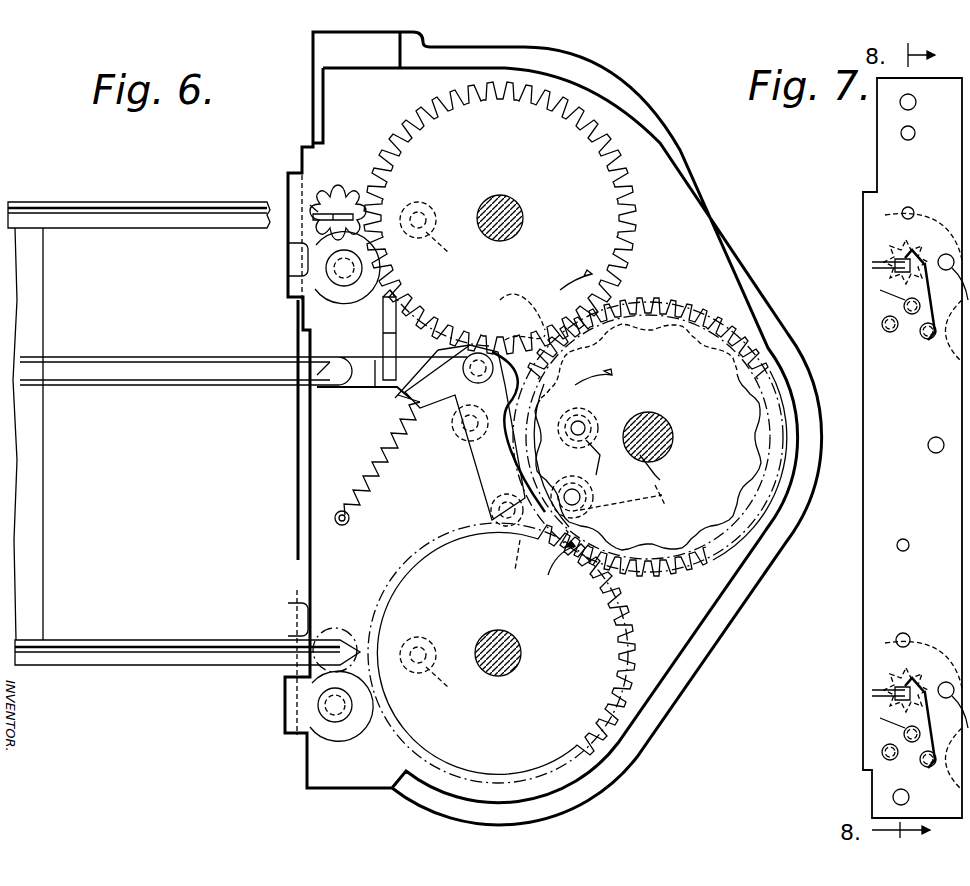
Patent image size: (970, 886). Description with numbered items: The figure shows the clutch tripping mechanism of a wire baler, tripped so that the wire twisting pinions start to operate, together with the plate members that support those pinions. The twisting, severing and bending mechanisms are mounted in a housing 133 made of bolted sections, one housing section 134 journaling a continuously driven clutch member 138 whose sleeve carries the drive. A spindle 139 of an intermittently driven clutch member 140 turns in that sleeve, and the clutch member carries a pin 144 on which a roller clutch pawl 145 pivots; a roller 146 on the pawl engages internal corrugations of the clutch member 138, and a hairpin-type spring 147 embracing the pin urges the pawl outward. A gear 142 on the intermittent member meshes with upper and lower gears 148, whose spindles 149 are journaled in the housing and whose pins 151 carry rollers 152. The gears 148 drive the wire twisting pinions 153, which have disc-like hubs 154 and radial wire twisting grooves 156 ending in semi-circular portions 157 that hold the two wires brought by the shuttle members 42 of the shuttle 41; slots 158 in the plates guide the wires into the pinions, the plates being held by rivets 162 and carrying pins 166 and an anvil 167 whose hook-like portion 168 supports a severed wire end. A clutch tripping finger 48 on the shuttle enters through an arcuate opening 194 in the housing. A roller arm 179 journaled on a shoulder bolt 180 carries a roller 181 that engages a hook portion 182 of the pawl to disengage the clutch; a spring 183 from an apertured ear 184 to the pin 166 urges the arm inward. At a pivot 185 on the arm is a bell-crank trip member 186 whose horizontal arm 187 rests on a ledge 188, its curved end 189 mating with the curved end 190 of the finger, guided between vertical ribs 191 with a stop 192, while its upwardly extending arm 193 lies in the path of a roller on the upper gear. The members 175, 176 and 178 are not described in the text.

In FIG. 6, the shuttle 41 is at (86, 202).
In FIG. 6, the shuttle members 42 is at (156, 202).
In FIG. 6, the clutch tripping finger 48 is at (136, 357).
In FIG. 6, the housing 133 is at (748, 598).
In FIG. 6, the housing section 134 is at (655, 680).
In FIG. 6, the continuously driven clutch member 138 is at (760, 368).
In FIG. 6, the spindle 139 is at (652, 406).
In FIG. 6, the intermittently driven clutch member 140 is at (678, 462).
In FIG. 6, the gear 142 is at (660, 310).
In FIG. 6, the pin 144 is at (580, 420).
In FIG. 6, the roller clutch pawl 145 is at (540, 430).
In FIG. 6, the roller 146 is at (552, 565).
In FIG. 6, the hairpin-type spring 147 is at (618, 497).
In FIG. 6, the upper and lower gears 148 is at (410, 122).
In FIG. 6, the spindles 149 is at (523, 222).
In FIG. 6, the pins 151 is at (449, 463).
In FIG. 6, the rollers 152 is at (424, 204).
In FIG. 6, the wire twisting pinions 153 is at (340, 188).
In FIG. 7, the wire twisting pinions 153 is at (878, 230).
In FIG. 7, the disc-like hubs 154 is at (930, 680).
In FIG. 6, the wire twisting grooves 156 is at (318, 212).
In FIG. 7, the wire twisting grooves 156 is at (893, 692).
In FIG. 6, the semi-circular portions 157 is at (355, 216).
In FIG. 7, the semi-circular portions 157 is at (893, 264).
In FIG. 7, the slots 158 is at (880, 258).
In FIG. 7, the rivets 162 is at (908, 207).
In FIG. 6, the pins 166 is at (334, 518).
In FIG. 7, the pins 166 is at (915, 133).
In FIG. 7, the anvil 167 is at (882, 292).
In FIG. 7, the hook-like portion 168 is at (920, 262).
In FIG. 6, the knob 175 is at (335, 298).
In FIG. 6, the roller 176 is at (340, 268).
In FIG. 6, the bracket 178 is at (292, 243).
In FIG. 6, the roller arm 179 is at (470, 470).
In FIG. 6, the shoulder bolt 180 is at (455, 430).
In FIG. 6, the roller 181 is at (490, 505).
In FIG. 6, the hook portion 182 is at (521, 555).
In FIG. 6, the spring 183 is at (385, 455).
In FIG. 6, the apertured ear 184 is at (405, 400).
In FIG. 6, the pivot 185 is at (474, 362).
In FIG. 6, the trip member 186 is at (422, 352).
In FIG. 6, the arm 187 is at (376, 395).
In FIG. 6, the ledge 188 is at (352, 397).
In FIG. 6, the curved end 189 is at (340, 350).
In FIG. 6, the curved end 190 is at (345, 362).
In FIG. 6, the vertical ribs 191 is at (383, 340).
In FIG. 6, the stop 192 is at (388, 303).
In FIG. 6, the upwardly extending arm 193 is at (515, 295).
In FIG. 6, the arcuate opening 194 is at (320, 378).